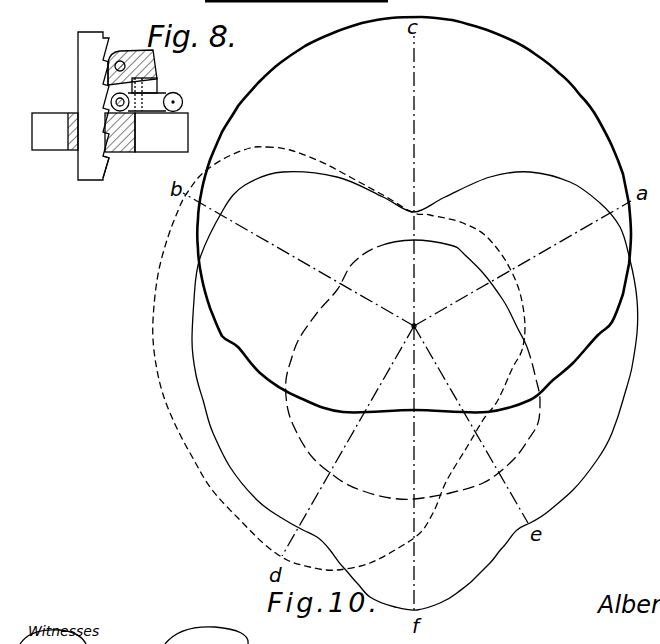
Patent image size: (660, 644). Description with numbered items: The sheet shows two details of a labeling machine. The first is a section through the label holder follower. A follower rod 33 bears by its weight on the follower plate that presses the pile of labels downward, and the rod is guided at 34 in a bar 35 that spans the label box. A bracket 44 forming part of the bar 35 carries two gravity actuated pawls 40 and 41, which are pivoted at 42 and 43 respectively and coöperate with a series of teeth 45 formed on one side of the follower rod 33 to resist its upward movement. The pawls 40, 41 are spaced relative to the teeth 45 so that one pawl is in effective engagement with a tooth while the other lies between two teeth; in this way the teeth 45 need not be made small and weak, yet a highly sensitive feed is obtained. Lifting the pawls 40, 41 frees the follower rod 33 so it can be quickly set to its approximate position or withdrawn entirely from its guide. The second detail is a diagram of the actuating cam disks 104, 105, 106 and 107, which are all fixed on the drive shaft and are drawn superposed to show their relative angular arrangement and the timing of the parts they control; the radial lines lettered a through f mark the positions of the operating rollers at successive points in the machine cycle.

In FIG. 8, the follower rod 33 is at (90, 40).
In FIG. 8, the guide 34 is at (75, 152).
In FIG. 8, the bar 35 is at (161, 132).
In FIG. 8, the pawl 40 is at (153, 63).
In FIG. 8, the pawl 41 is at (175, 100).
In FIG. 8, the pivot 42 is at (120, 61).
In FIG. 8, the pivot 43 is at (115, 95).
In FIG. 8, the bracket 44 is at (107, 87).
In FIG. 8, the teeth 45 is at (110, 163).
In FIG. 10, the cam disk 104 is at (256, 373).
In FIG. 10, the cam disk 105 is at (302, 152).
In FIG. 10, the cam disk 106 is at (405, 241).
In FIG. 10, the cam disk 107 is at (259, 176).